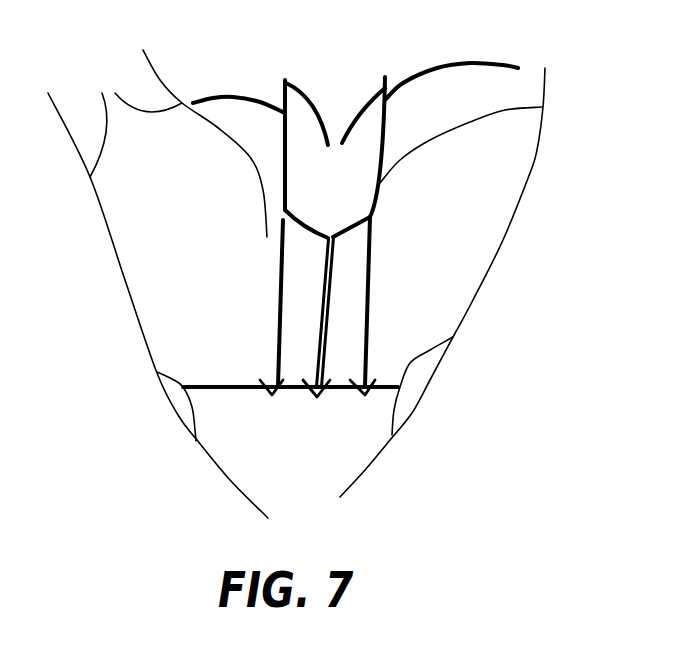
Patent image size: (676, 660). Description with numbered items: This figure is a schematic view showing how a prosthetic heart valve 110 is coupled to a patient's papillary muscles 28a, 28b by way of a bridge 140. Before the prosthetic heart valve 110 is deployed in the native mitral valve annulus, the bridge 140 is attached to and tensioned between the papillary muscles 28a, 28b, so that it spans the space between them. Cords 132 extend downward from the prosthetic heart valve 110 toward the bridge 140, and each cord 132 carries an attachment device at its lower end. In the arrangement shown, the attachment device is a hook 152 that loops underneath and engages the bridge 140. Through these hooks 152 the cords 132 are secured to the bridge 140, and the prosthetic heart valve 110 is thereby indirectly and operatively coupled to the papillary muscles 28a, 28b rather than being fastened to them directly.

The prosthetic heart valve 110 is at (385, 122).
The cords 132 is at (372, 291).
The bridge 140 is at (225, 389).
The hook 152 is at (366, 394).
The papillary muscle 28a is at (178, 397).
The papillary muscle 28b is at (432, 362).